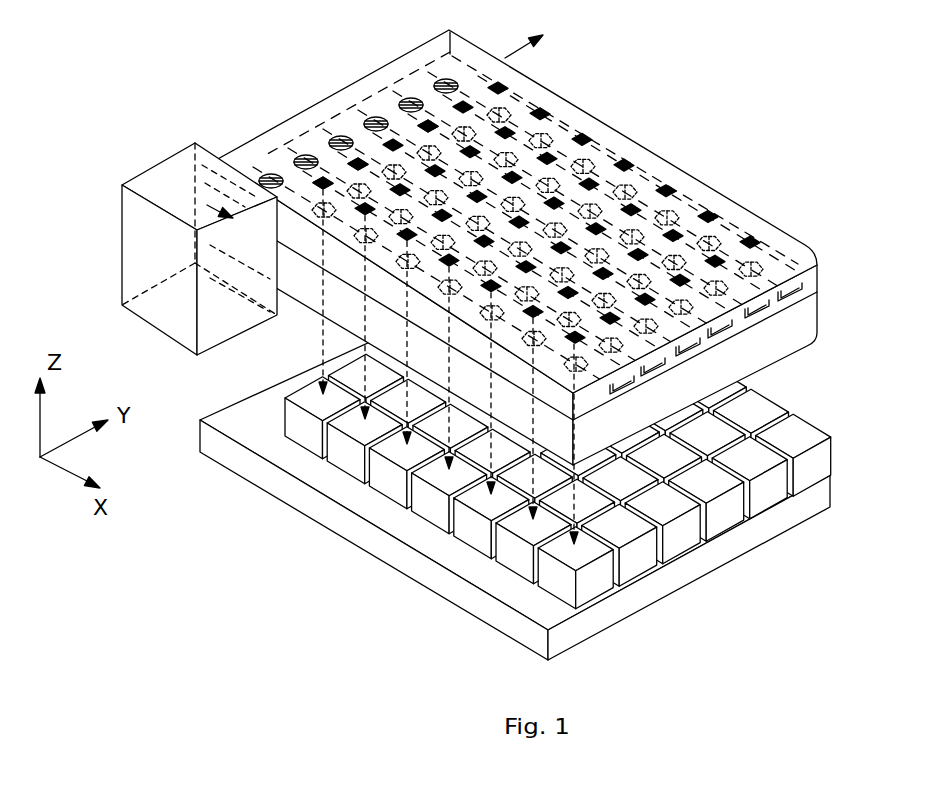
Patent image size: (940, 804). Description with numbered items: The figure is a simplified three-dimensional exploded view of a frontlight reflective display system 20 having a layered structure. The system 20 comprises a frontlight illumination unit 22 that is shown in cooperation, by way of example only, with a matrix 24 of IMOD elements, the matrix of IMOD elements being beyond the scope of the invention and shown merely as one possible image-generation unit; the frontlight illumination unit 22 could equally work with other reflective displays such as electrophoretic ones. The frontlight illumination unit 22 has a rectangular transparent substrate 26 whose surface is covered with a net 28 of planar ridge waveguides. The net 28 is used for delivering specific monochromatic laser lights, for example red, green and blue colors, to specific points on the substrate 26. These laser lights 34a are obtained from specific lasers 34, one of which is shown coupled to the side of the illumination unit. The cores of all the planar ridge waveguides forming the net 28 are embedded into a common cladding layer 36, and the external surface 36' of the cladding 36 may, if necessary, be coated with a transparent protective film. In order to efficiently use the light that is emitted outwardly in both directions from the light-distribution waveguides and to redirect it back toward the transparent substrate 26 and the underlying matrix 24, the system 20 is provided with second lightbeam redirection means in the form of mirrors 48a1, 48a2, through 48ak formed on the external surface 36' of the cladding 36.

The frontlight reflective display system 20 is at (620, 116).
The frontlight illumination unit 22 is at (697, 180).
The matrix of IMOD elements 24 is at (824, 428).
The rectangular transparent substrate 26 is at (806, 318).
The net of planar ridge waveguides 28 is at (727, 230).
The laser 34 is at (188, 168).
The laser light 34a is at (194, 228).
The cladding layer 36 is at (768, 284).
The external surface of the cladding 36' is at (564, 67).
The mirror 48a1 is at (323, 178).
The mirror 48a2 is at (358, 160).
The mirror 48ak is at (430, 122).